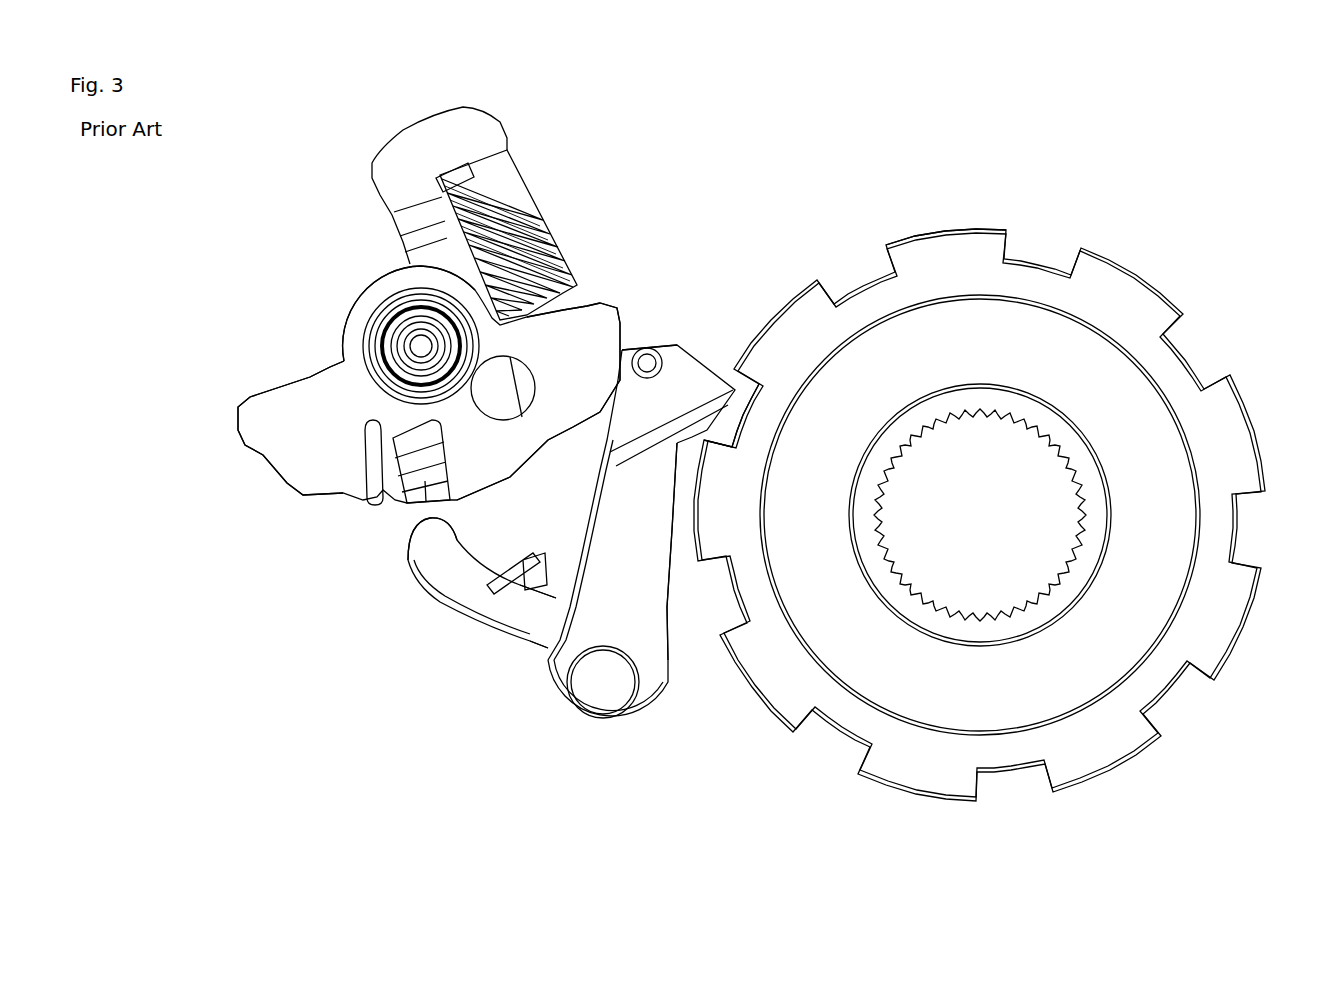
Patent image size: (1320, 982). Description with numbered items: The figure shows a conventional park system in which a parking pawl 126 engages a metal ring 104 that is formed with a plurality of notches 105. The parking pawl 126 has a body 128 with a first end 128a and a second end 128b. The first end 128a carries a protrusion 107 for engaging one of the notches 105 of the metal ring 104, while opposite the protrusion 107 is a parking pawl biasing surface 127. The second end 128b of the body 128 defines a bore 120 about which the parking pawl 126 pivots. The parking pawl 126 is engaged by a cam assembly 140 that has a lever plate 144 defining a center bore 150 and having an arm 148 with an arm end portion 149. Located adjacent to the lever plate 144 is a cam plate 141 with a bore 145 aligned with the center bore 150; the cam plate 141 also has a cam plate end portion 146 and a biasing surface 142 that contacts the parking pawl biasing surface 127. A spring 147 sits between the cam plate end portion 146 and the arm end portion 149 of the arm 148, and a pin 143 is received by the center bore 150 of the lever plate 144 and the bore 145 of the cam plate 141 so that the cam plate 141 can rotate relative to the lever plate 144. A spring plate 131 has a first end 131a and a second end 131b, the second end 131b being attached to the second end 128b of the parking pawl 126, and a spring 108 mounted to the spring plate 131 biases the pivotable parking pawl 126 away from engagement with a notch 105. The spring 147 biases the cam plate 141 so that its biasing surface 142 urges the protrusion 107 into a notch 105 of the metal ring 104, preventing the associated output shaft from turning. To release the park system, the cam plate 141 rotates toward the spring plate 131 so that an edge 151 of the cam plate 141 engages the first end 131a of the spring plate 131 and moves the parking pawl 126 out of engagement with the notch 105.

The metal ring 104 is at (1090, 290).
The notches 105 is at (940, 235).
The protrusion 107 is at (728, 415).
The spring 108 is at (525, 557).
The bore 120 is at (602, 692).
The parking pawl 126 is at (612, 520).
The parking pawl biasing surface 127 is at (625, 347).
The body 128 is at (652, 617).
The first end 128a is at (683, 342).
The second end 128b is at (566, 722).
The spring plate 131 is at (498, 614).
The first end 131a is at (407, 540).
The second end 131b is at (555, 622).
The cam assembly 140 is at (335, 190).
The cam plate 141 is at (385, 288).
The biasing surface 142 is at (620, 323).
The pin 143 is at (423, 345).
The lever plate 144 is at (300, 378).
The bore 145 is at (393, 387).
The cam plate end portion 146 is at (556, 311).
The spring 147 is at (515, 196).
The arm 148 is at (420, 128).
The arm end portion 149 is at (470, 178).
The center bore 150 is at (420, 383).
The edge 151 is at (443, 457).